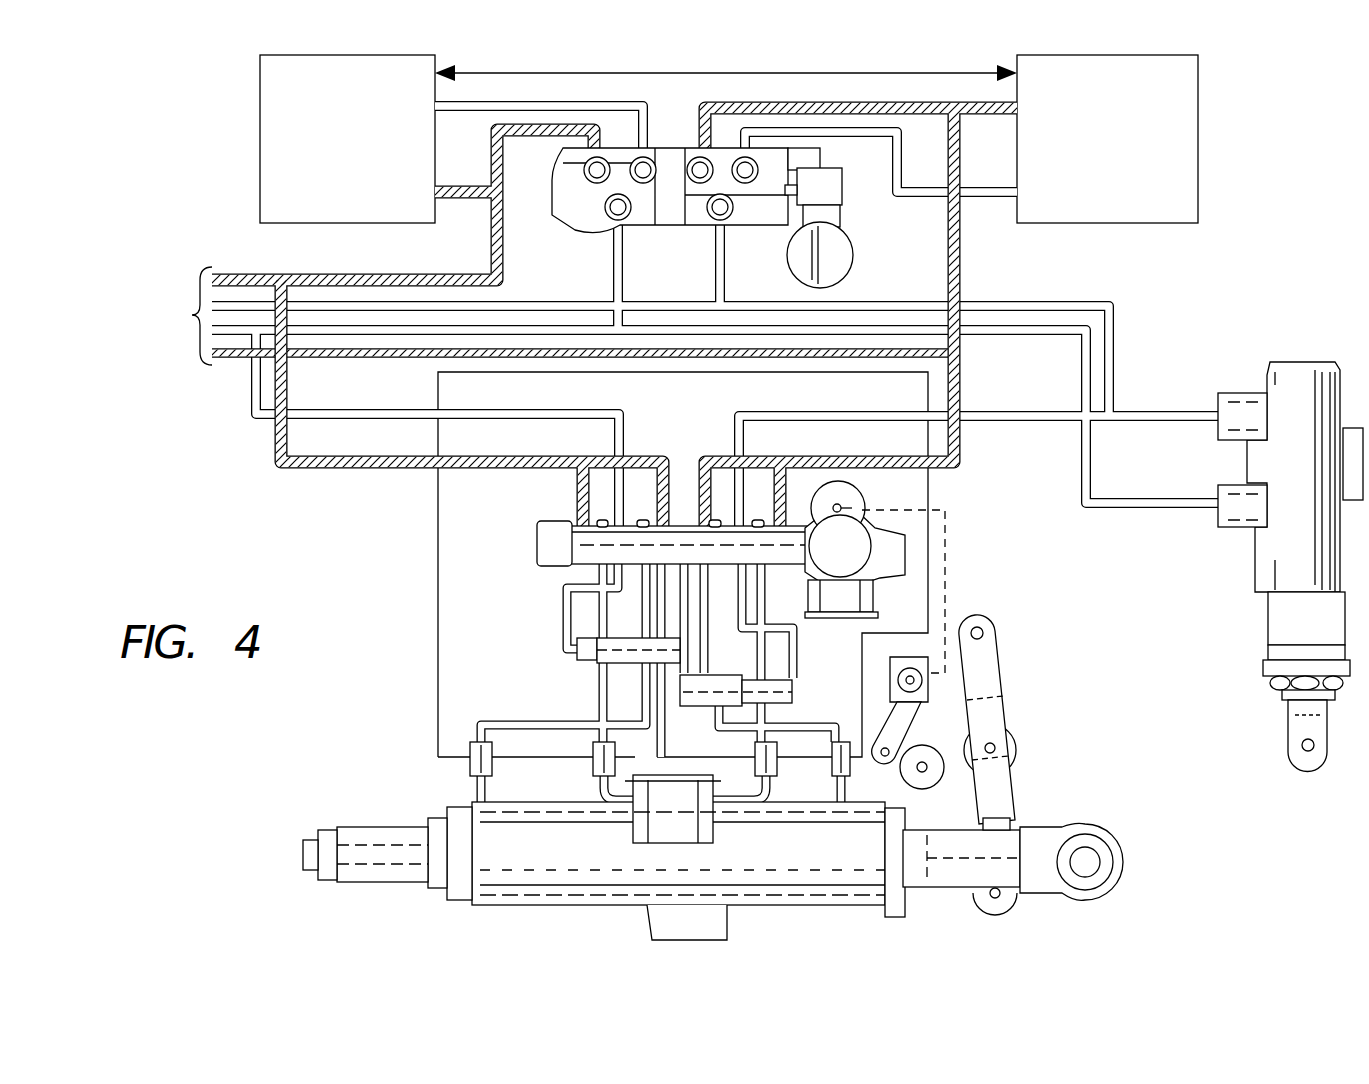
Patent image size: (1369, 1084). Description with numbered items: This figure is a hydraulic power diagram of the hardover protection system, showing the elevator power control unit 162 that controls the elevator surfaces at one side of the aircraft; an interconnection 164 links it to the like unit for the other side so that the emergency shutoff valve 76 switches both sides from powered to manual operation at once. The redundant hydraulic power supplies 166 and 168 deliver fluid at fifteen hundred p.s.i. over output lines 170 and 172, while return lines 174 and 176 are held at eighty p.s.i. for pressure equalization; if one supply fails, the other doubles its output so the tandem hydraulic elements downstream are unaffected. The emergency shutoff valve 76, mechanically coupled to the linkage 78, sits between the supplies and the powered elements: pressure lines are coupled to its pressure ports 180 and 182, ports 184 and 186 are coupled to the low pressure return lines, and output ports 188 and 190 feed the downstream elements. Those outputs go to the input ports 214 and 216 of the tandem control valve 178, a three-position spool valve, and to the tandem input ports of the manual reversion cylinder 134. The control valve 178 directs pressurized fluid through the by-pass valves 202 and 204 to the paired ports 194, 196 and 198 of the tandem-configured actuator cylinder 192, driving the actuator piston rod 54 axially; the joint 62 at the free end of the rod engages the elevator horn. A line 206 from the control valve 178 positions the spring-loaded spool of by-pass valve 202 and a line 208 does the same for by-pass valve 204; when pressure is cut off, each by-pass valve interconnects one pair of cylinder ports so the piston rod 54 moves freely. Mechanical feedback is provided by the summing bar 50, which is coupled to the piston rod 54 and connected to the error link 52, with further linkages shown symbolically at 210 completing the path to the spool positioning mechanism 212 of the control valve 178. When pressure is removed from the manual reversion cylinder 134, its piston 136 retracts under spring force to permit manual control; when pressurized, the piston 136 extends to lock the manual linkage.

The summing bar 50 is at (1043, 743).
The error link 52 is at (960, 755).
The actuator piston rod 54 is at (955, 884).
The joint 62 is at (1100, 860).
The emergency shutoff valve 76 is at (603, 233).
The linkage 78 is at (930, 268).
The manual reversion cylinder 134 is at (1352, 402).
The piston 136 is at (1298, 753).
The elevator power control unit 162 is at (1178, 302).
The interconnection 164 is at (680, 385).
The hydraulic power supply 166 is at (1198, 143).
The hydraulic power supply 168 is at (260, 150).
The output line 170 is at (985, 197).
The output line 172 is at (510, 103).
The return line 174 is at (893, 108).
The return line 176 is at (503, 177).
The tandem control valve 178 is at (580, 565).
The pressure port 180 is at (661, 160).
The pressure port 182 is at (752, 165).
The port 184 is at (604, 162).
The port 186 is at (706, 165).
The output port 188 is at (623, 216).
The output port 190 is at (740, 212).
The actuator cylinder 192 is at (525, 900).
The actuator cylinder port 194 is at (475, 805).
The actuator cylinder port 196 is at (603, 798).
The actuator cylinder port 198 is at (768, 798).
The by-pass valve 202 is at (590, 663).
The by-pass valve 204 is at (808, 676).
The line 206 is at (576, 650).
The line 208 is at (807, 660).
The mechanical linkages 210 is at (945, 565).
The spool positioning mechanism 212 is at (868, 518).
The input port 214 is at (603, 518).
The input port 216 is at (725, 525).